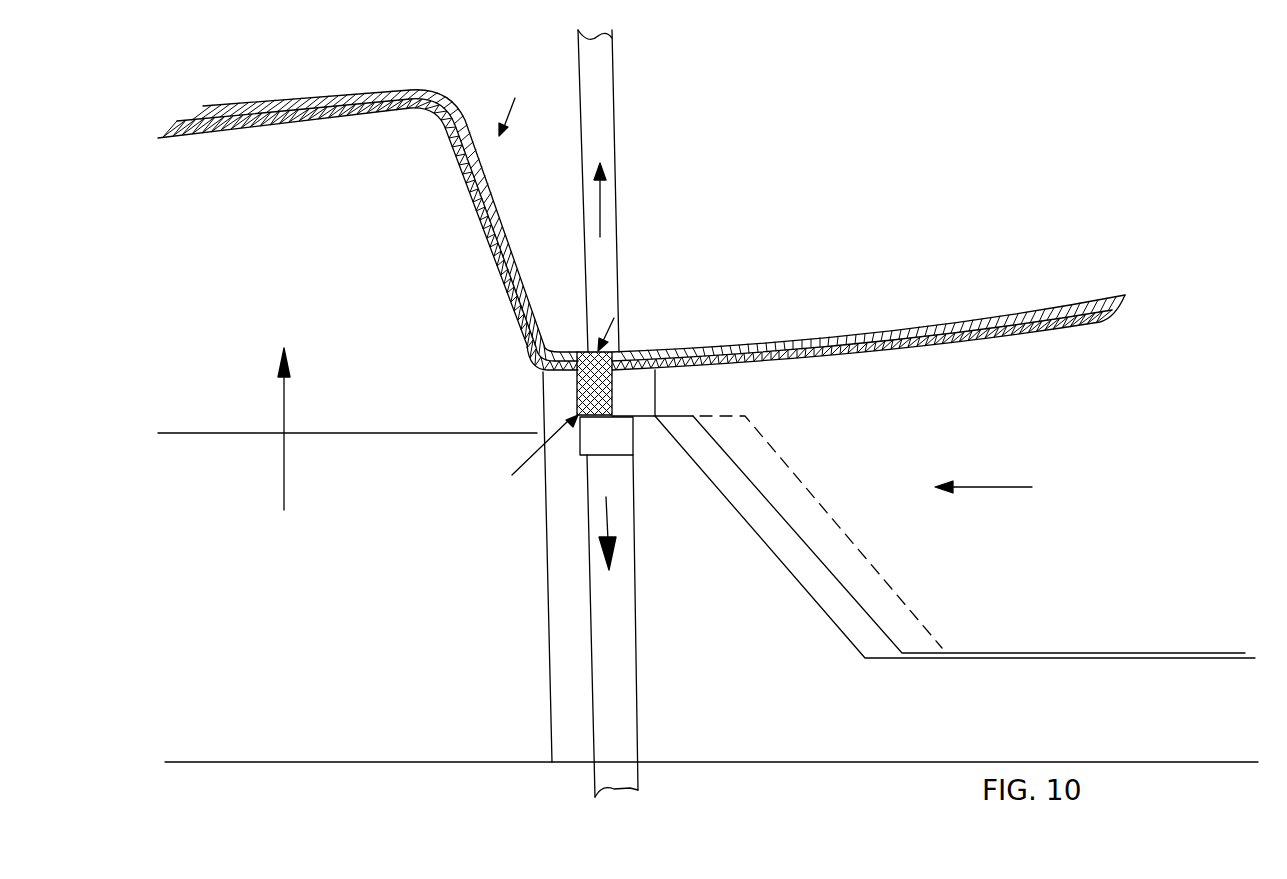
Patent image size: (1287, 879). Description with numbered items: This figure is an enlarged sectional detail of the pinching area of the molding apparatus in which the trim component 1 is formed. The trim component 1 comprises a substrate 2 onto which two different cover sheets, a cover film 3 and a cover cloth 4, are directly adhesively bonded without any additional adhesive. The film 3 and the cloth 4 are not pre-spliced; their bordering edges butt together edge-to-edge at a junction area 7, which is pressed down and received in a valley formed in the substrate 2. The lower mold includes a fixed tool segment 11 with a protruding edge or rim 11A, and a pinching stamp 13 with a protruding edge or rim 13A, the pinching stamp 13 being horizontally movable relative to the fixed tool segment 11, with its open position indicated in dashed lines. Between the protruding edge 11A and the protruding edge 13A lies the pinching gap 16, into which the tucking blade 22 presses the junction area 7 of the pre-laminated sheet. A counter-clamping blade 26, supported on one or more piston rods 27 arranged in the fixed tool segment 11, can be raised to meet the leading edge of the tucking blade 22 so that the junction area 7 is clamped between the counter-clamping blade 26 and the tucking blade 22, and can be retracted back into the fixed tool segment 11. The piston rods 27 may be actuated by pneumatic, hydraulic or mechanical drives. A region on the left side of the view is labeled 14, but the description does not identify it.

The trim component 1 is at (513, 106).
The substrate 2 is at (1025, 330).
The cover film 3 is at (505, 228).
The cover cloth 4 is at (622, 352).
The junction area 7 is at (626, 296).
The fixed tool segment 11 is at (670, 678).
The protruding edge of the fixed tool segment 11A is at (556, 396).
The pinching stamp 13 is at (1108, 510).
The protruding edge of the pinching stamp 13A is at (647, 391).
The left die section 14 is at (325, 292).
The pinching gap 16 is at (537, 462).
The tucking blade 22 is at (590, 88).
The counter-clamping blade 26 is at (615, 438).
The piston rods 27 is at (613, 590).